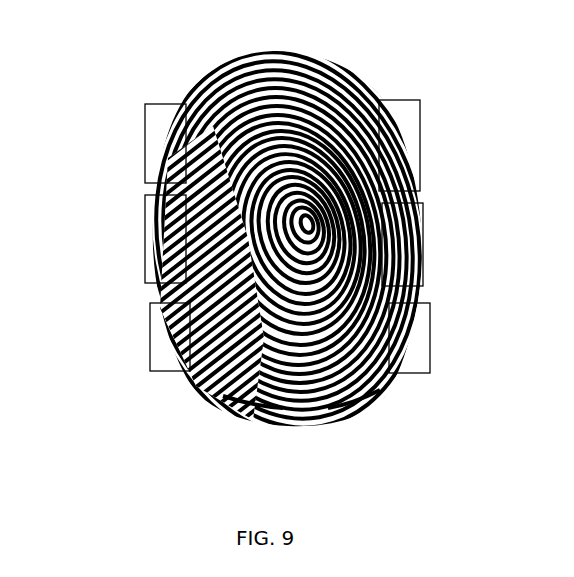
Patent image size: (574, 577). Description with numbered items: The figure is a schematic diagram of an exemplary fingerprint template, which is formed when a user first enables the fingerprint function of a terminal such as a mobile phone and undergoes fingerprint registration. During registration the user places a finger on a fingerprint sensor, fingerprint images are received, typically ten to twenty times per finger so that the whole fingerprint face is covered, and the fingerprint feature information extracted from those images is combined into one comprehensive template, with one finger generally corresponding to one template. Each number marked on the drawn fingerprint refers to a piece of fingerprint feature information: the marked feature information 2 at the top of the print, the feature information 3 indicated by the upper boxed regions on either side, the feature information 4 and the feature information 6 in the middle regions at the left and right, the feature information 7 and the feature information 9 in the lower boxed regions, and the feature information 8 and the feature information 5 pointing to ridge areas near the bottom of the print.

The fingerprint image 2 is at (240, 62).
The upper sensing regions 3 is at (137, 140).
The middle left sensing region 4 is at (137, 238).
The lower right ridge area 5 is at (352, 390).
The middle right sensing region 6 is at (415, 240).
The lower left sensing region 7 is at (142, 338).
The lower left ridge area 8 is at (248, 395).
The lower right sensing region 9 is at (422, 338).